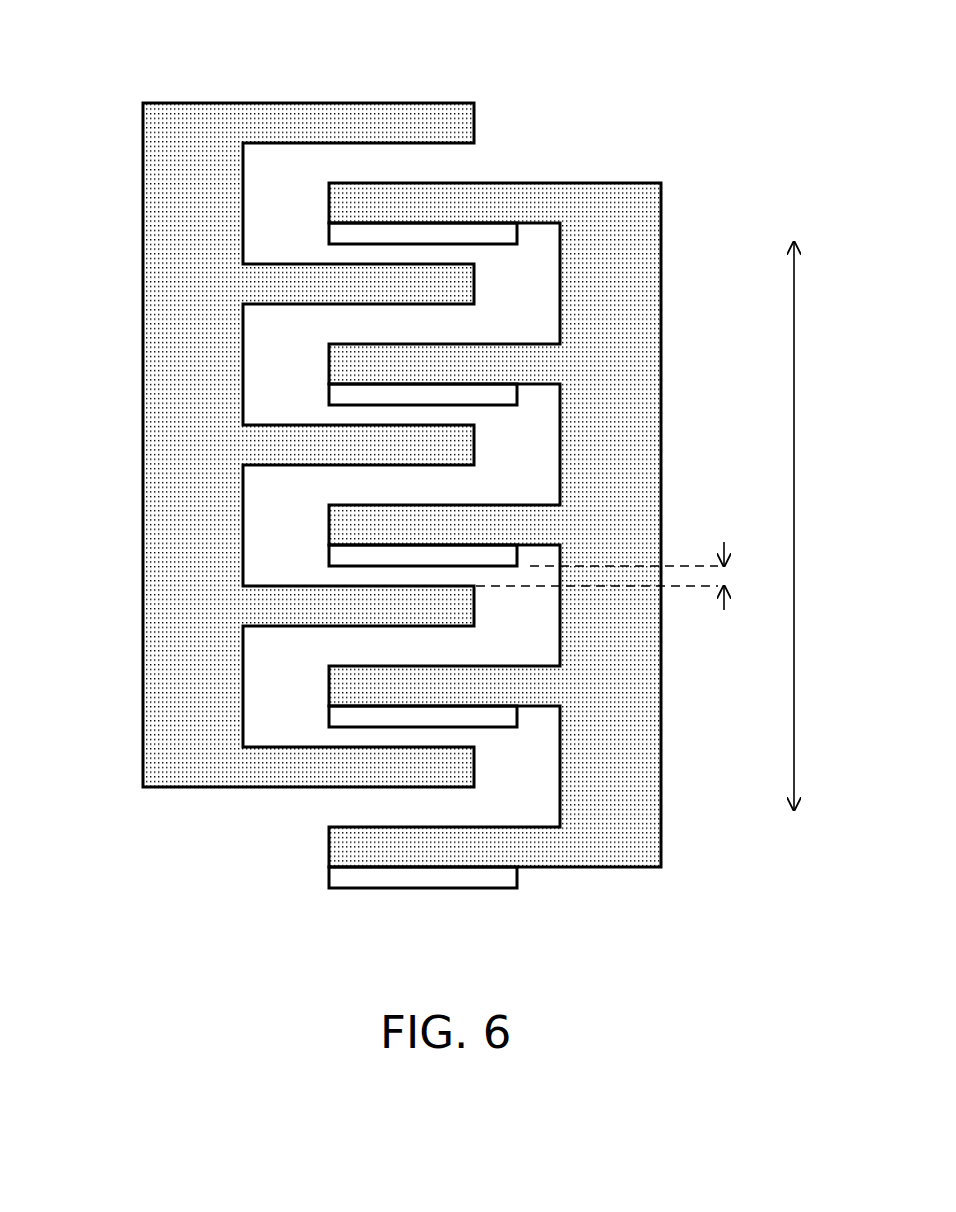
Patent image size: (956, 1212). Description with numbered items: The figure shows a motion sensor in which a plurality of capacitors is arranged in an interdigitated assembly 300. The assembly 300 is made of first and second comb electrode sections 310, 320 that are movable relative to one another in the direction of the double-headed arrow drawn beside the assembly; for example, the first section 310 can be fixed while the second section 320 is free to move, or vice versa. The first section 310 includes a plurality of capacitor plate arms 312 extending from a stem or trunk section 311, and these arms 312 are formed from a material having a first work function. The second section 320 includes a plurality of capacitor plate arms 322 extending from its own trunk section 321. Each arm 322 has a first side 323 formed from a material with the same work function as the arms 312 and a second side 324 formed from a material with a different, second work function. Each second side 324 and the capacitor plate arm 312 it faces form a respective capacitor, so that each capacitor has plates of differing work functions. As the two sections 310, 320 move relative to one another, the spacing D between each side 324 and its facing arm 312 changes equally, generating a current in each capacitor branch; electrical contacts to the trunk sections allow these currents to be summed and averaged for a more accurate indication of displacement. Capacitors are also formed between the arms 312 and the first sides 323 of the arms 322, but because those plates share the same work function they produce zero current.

The interdigitated assembly 300 is at (766, 972).
The first comb electrode section 310 is at (269, 398).
The trunk section 311 is at (269, 415).
The capacitor plate arms 312 is at (388, 108).
The second comb electrode section 320 is at (501, 488).
The trunk section 321 is at (501, 518).
The capacitor plate arms 322 is at (496, 518).
The first side 323 is at (358, 198).
The second side 324 is at (512, 232).